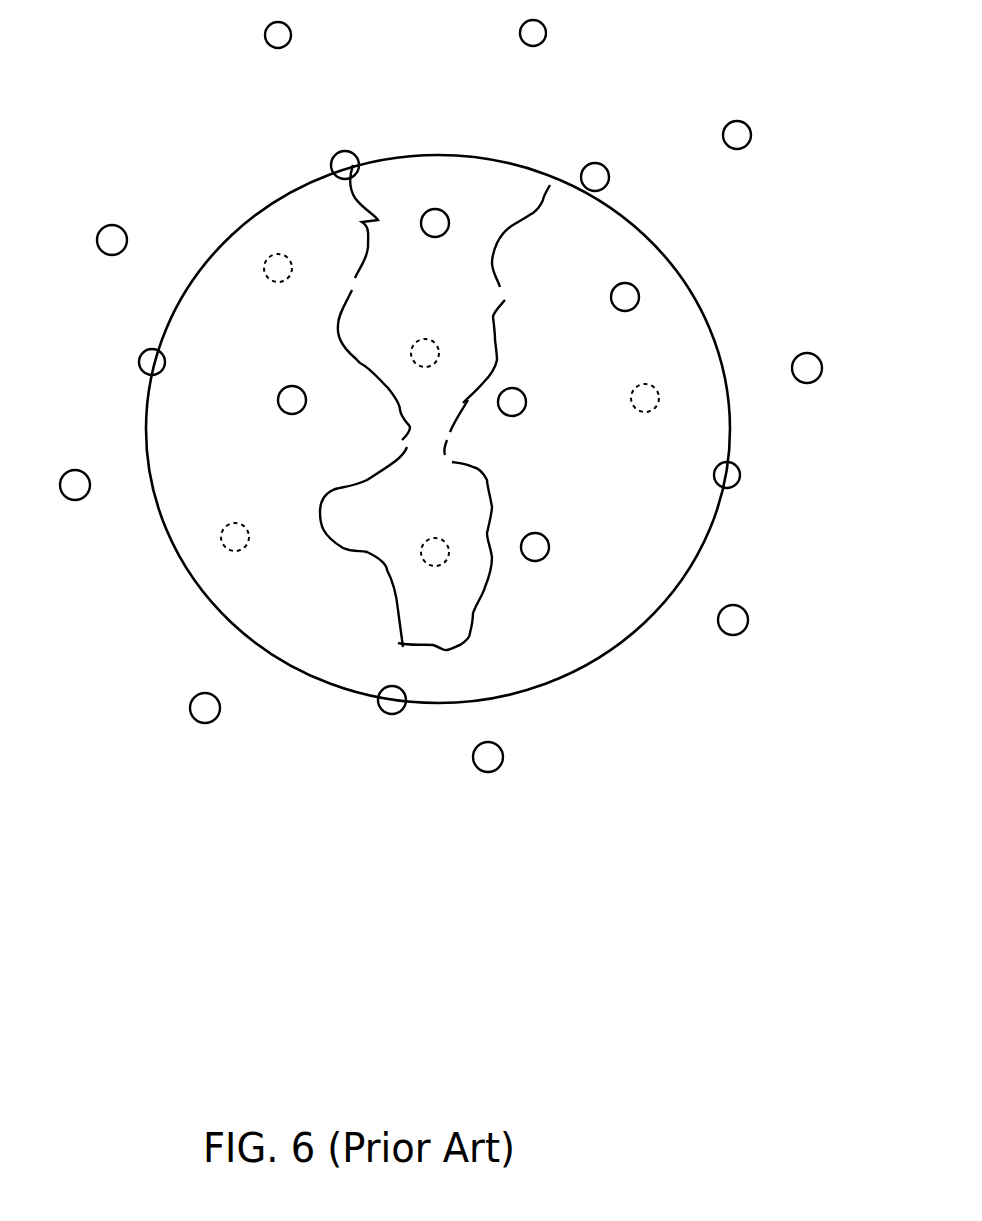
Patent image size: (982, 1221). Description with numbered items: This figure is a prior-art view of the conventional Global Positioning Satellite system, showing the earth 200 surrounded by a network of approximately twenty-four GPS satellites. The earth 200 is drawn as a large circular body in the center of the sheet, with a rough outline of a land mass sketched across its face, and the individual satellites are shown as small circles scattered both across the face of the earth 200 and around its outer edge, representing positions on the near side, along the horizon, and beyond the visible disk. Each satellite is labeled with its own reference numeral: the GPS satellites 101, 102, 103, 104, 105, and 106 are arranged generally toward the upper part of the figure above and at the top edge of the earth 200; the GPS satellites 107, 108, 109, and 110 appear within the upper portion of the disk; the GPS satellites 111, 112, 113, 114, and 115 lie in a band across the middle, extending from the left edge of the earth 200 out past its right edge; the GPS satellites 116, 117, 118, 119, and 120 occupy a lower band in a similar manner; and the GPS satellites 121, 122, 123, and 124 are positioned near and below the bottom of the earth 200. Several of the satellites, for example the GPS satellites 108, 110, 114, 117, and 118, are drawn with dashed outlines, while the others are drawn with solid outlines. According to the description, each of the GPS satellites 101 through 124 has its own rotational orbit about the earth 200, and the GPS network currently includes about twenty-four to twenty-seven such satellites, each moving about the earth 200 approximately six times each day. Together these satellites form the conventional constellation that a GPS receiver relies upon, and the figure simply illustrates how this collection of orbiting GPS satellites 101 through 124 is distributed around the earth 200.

The GPS satellite 101 is at (272, 48).
The GPS satellite 102 is at (528, 46).
The GPS satellite 103 is at (108, 255).
The GPS satellite 104 is at (338, 153).
The GPS satellite 105 is at (598, 163).
The GPS satellite 106 is at (742, 147).
The GPS satellite 107 is at (478, 206).
The GPS satellite 108 is at (272, 282).
The GPS satellite 109 is at (622, 311).
The GPS satellite 110 is at (420, 340).
The GPS satellite 111 is at (139, 358).
The GPS satellite 112 is at (288, 414).
The GPS satellite 113 is at (525, 410).
The GPS satellite 114 is at (650, 412).
The GPS satellite 115 is at (808, 383).
The GPS satellite 116 is at (75, 500).
The GPS satellite 117 is at (249, 534).
The GPS satellite 118 is at (442, 540).
The GPS satellite 119 is at (549, 548).
The GPS satellite 120 is at (770, 492).
The GPS satellite 121 is at (208, 723).
The GPS satellite 122 is at (392, 714).
The GPS satellite 123 is at (490, 772).
The GPS satellite 124 is at (735, 635).
The earth 200 is at (570, 632).